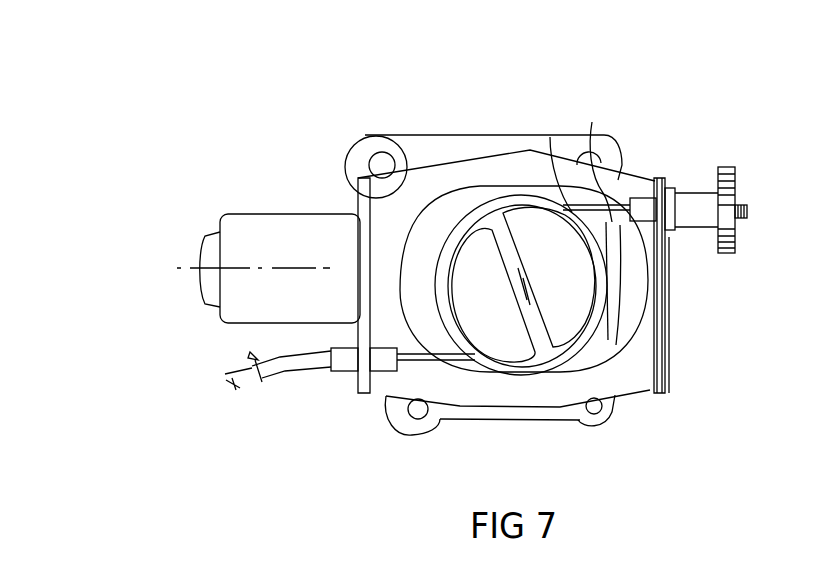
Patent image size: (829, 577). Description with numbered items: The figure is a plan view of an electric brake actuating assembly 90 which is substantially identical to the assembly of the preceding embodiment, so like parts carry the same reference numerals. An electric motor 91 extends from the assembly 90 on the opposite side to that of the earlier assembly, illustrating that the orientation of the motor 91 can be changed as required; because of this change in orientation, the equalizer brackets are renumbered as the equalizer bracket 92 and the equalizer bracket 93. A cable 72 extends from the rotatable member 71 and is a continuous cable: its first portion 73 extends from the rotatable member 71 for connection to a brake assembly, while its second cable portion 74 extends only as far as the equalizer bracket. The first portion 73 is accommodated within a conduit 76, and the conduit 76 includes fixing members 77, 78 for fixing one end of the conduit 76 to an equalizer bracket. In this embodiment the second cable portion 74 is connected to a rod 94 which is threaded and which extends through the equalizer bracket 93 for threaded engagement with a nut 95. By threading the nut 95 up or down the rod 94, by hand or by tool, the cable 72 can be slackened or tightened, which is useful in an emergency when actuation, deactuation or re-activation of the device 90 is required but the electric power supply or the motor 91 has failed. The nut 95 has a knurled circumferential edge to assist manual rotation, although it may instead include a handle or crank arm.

The rotatable member 71 is at (563, 308).
The cable 72 is at (550, 137).
The first portion of the cable 73 is at (448, 358).
The second cable portion 74 is at (618, 150).
The conduit 76 is at (278, 358).
The fixing member 77 is at (345, 371).
The fixing member 78 is at (392, 418).
The assembly 90 is at (634, 102).
The electric motor 91 is at (270, 232).
The equalizer bracket 92 is at (380, 198).
The equalizer bracket 93 is at (660, 357).
The rod 94 is at (640, 200).
The nut 95 is at (728, 253).